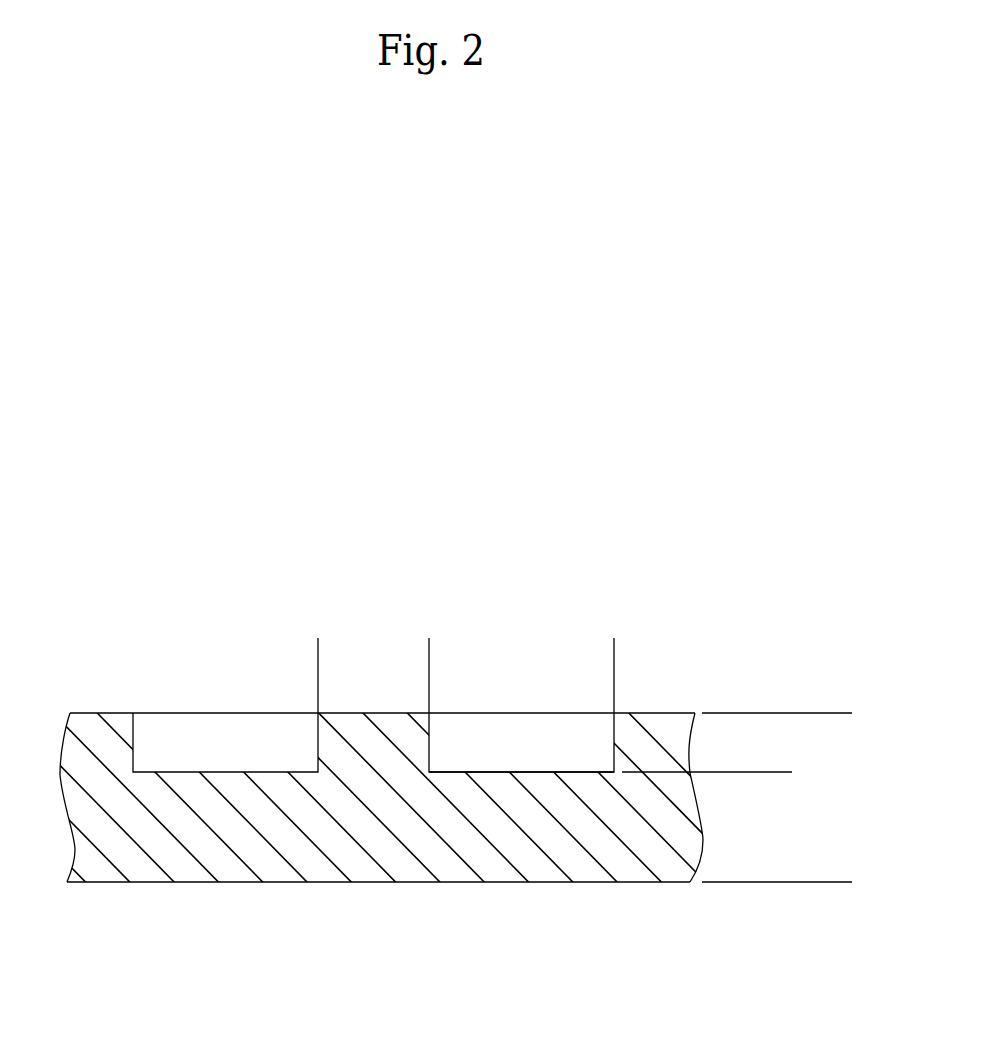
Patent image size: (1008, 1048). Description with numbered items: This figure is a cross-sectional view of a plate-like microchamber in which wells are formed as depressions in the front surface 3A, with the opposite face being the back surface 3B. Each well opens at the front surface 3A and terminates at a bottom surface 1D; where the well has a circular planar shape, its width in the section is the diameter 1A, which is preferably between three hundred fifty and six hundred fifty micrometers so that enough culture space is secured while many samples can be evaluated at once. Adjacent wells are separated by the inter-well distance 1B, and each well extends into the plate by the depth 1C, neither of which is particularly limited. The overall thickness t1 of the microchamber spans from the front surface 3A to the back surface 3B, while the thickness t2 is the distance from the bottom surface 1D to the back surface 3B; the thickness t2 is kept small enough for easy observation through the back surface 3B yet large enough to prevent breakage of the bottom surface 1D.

The front surface 3A is at (115, 713).
The back surface 3B is at (428, 882).
The diameter 1A is at (614, 653).
The inter-well distance 1B is at (429, 653).
The depth 1C is at (767, 713).
The bottom surface 1D is at (500, 770).
The thickness t1 is at (837, 713).
The thickness t2 is at (767, 772).